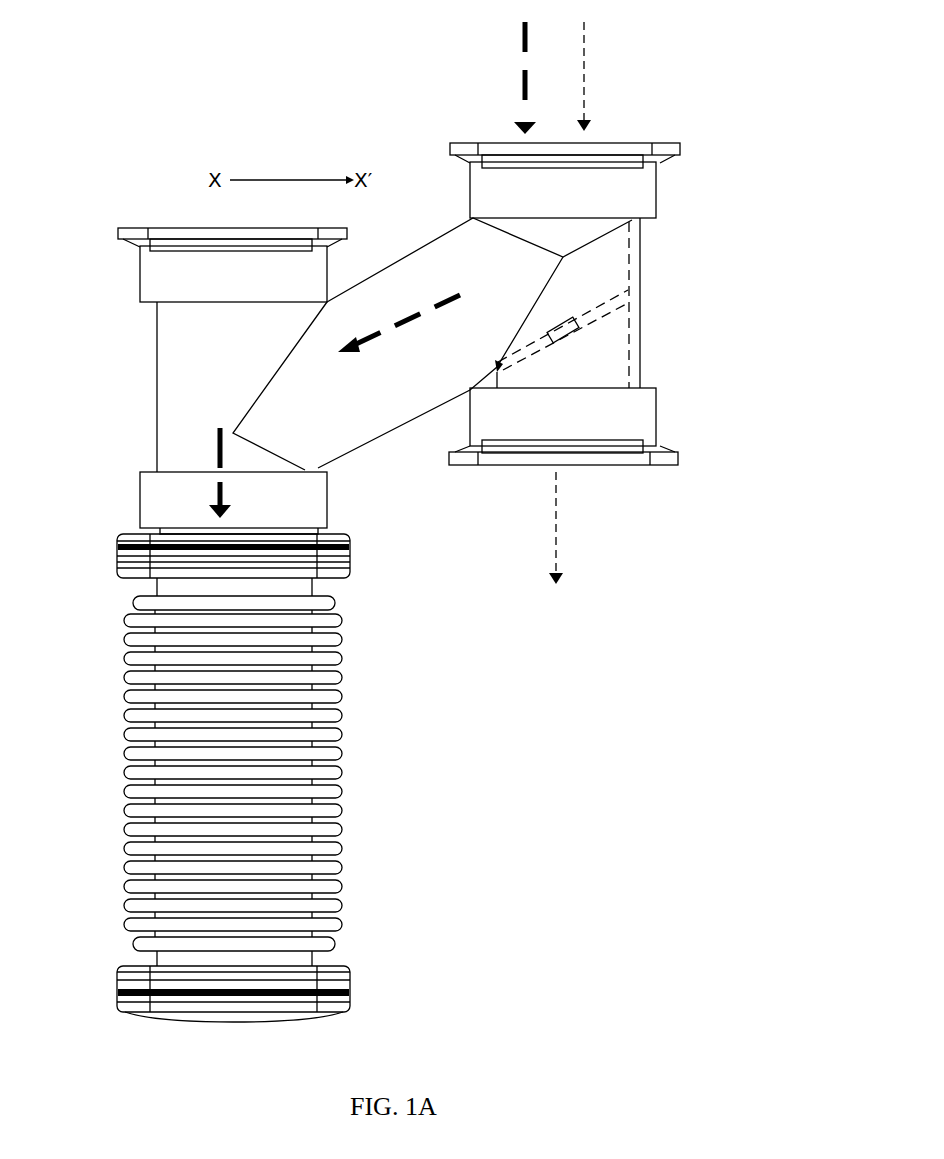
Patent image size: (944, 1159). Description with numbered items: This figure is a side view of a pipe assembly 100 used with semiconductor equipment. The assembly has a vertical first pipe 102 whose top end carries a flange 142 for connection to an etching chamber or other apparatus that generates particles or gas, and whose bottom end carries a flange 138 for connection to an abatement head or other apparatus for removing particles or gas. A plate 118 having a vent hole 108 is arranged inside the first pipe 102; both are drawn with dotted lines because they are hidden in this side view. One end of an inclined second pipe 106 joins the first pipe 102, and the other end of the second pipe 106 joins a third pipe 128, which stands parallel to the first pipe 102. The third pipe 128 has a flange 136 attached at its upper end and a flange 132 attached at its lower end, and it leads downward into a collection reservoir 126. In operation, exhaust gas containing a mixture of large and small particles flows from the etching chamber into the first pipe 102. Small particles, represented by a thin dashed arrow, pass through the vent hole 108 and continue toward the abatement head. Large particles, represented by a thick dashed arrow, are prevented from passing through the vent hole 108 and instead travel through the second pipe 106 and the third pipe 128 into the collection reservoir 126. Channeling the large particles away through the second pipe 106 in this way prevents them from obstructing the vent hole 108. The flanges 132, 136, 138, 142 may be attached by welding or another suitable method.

The pipe assembly 100 is at (693, 95).
The first pipe 102 is at (639, 247).
The second pipe 106 is at (364, 284).
The vent hole 108 is at (568, 330).
The plate 118 is at (605, 308).
The collection reservoir 126 is at (86, 525).
The third pipe 128 is at (157, 404).
The flange 132 is at (140, 504).
The flange 136 is at (138, 269).
The flange 138 is at (654, 396).
The flange 142 is at (653, 191).